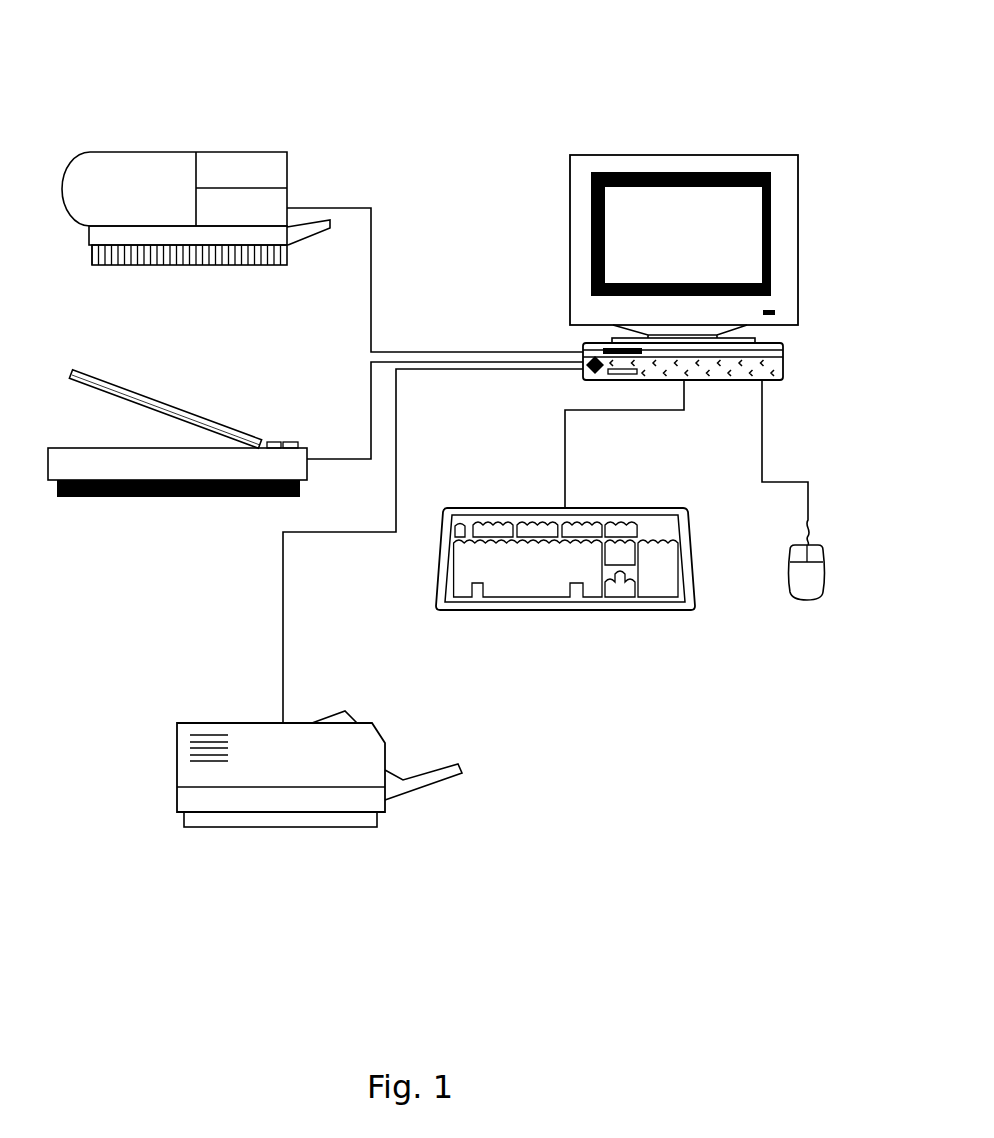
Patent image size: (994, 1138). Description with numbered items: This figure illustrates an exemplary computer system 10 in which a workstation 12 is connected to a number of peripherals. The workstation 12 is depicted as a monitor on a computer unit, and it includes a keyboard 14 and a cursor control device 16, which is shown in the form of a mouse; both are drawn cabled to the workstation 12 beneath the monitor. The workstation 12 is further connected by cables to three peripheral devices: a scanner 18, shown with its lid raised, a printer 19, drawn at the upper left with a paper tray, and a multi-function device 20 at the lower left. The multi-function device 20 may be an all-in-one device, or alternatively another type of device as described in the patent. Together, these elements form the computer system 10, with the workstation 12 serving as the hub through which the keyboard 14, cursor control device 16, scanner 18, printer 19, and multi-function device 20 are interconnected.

The computer system 10 is at (465, 87).
The workstation 12 is at (680, 155).
The keyboard 14 is at (565, 610).
The cursor control device 16 is at (823, 560).
The scanner 18 is at (177, 497).
The printer 19 is at (176, 152).
The multi-function device 20 is at (177, 773).